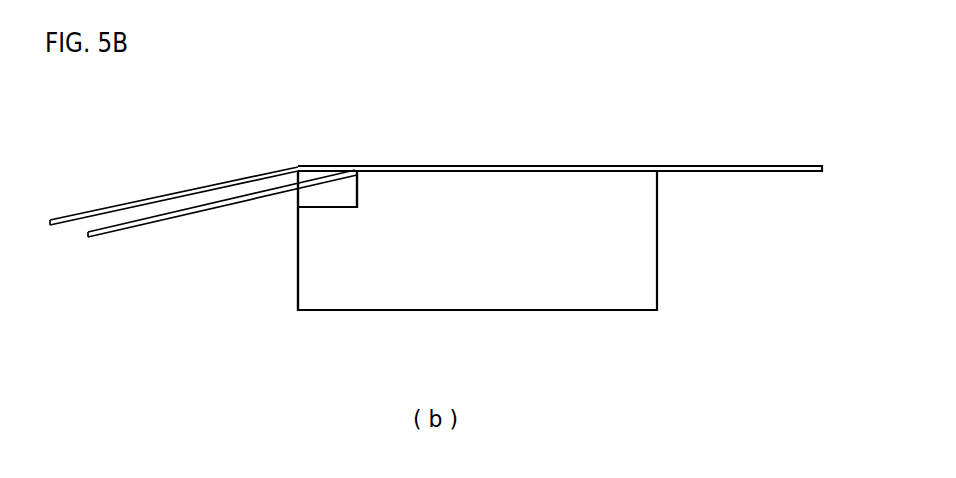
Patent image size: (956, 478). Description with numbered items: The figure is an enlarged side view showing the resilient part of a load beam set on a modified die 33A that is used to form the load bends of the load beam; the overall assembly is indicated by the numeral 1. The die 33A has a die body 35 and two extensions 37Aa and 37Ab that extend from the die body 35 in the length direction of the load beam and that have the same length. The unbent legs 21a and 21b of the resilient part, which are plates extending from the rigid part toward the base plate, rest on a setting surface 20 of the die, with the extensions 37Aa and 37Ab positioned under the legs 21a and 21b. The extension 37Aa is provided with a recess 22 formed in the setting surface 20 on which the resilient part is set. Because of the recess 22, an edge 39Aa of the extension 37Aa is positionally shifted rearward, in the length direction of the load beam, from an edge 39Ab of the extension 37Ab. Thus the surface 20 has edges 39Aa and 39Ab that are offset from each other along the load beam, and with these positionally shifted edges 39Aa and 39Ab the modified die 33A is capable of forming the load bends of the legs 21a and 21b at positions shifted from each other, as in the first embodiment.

The liquid ejecting head 1 is at (755, 162).
The setting surface 20 is at (546, 167).
The leg 21a is at (183, 215).
The leg 21b is at (200, 188).
The recess 22 is at (313, 207).
The die 33A is at (657, 268).
The die body 35 is at (606, 290).
The extension 37Aa is at (373, 293).
The extension 37Ab is at (333, 197).
The edge 39Aa is at (358, 166).
The edge 39Ab is at (300, 166).